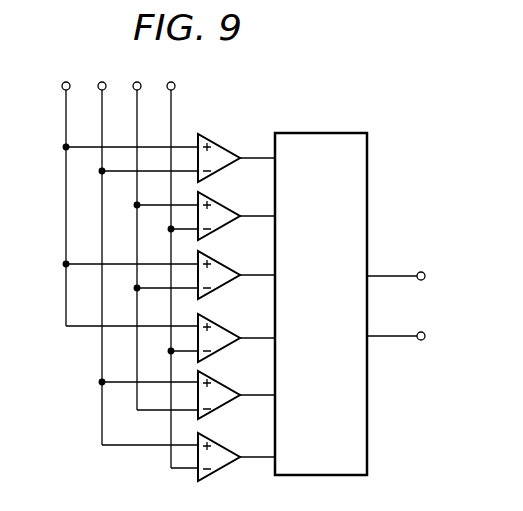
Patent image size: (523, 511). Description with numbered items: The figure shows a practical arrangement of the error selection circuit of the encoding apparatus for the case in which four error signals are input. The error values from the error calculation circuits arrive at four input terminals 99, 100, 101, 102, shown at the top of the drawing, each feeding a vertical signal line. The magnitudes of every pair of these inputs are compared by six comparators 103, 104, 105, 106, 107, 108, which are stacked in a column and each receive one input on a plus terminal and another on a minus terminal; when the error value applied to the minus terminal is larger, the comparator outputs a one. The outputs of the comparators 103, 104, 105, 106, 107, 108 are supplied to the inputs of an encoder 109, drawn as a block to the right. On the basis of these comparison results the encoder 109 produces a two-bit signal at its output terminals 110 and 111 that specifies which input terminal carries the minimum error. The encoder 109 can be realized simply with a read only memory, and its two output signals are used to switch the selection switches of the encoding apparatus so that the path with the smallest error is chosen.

The input terminal 99 is at (63, 92).
The input terminal 100 is at (99, 92).
The input terminal 101 is at (134, 92).
The input terminal 102 is at (168, 92).
The comparator 103 is at (230, 142).
The comparator 104 is at (230, 200).
The comparator 105 is at (230, 259).
The comparator 106 is at (230, 322).
The comparator 107 is at (230, 379).
The comparator 108 is at (230, 441).
The encoder 109 is at (331, 133).
The output terminal 110 is at (421, 272).
The output terminal 111 is at (421, 340).